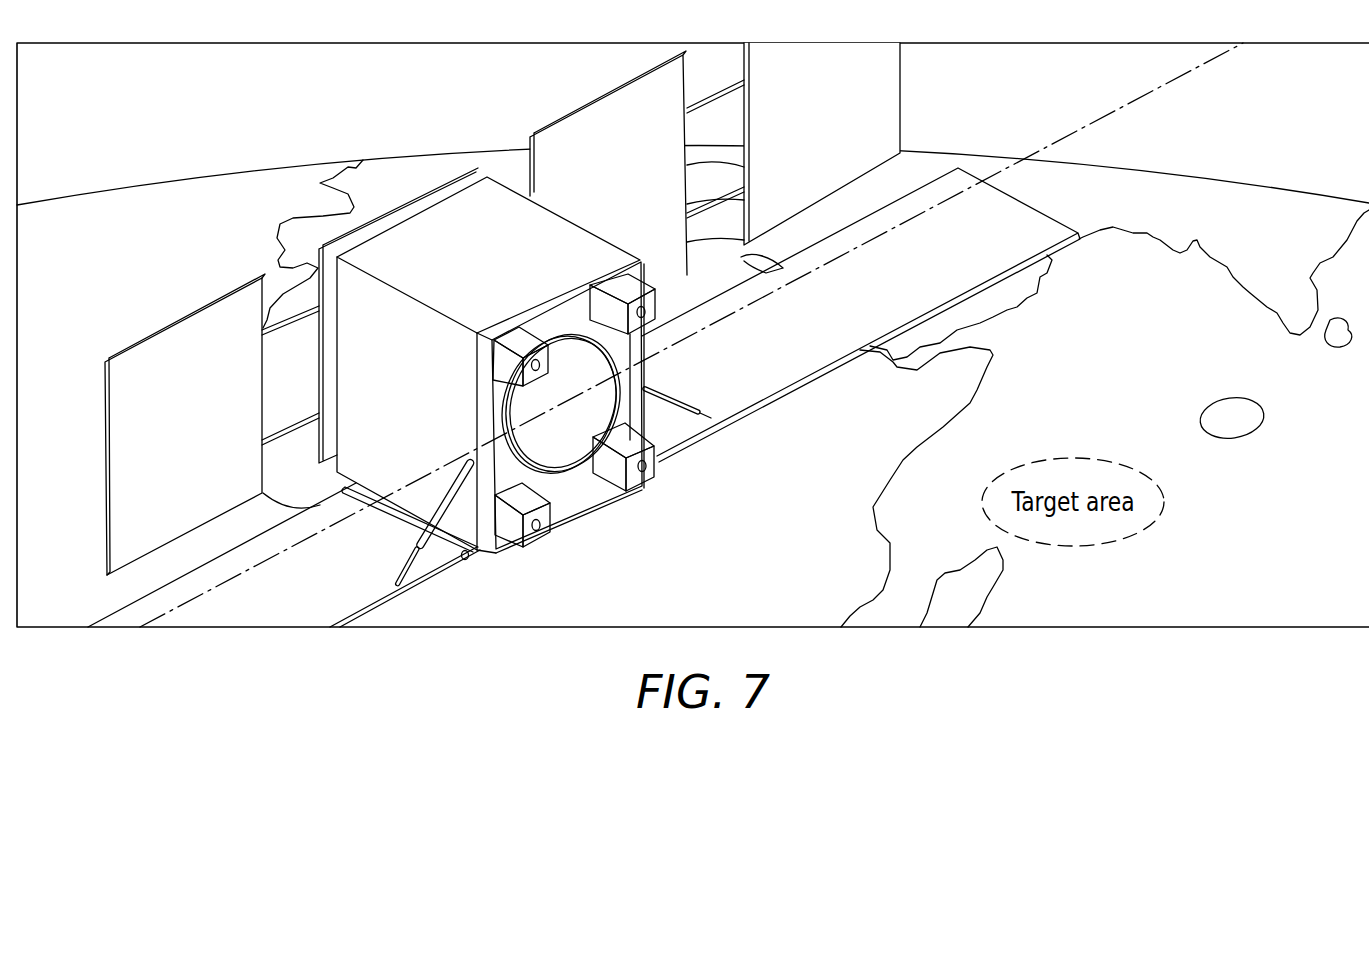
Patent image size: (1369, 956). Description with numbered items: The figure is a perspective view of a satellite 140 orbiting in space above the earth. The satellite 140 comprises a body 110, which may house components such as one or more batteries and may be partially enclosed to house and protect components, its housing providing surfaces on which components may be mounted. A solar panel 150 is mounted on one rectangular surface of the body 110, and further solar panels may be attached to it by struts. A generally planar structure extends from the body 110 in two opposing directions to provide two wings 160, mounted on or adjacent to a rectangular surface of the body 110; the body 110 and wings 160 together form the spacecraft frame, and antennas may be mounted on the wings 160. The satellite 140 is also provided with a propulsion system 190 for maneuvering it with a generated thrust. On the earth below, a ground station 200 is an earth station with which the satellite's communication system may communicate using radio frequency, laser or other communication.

The body 110 is at (462, 264).
The satellite 140 is at (539, 413).
The solar panel 150 is at (163, 438).
The wings 160 is at (840, 295).
The propulsion system 190 is at (606, 509).
The ground station 200 is at (1207, 401).